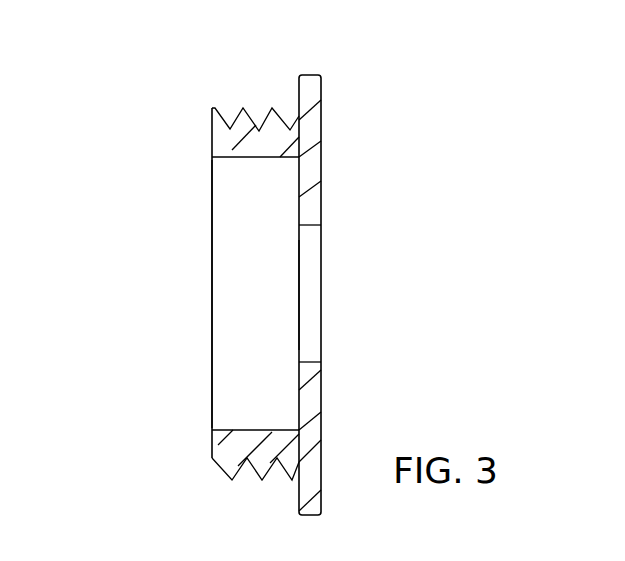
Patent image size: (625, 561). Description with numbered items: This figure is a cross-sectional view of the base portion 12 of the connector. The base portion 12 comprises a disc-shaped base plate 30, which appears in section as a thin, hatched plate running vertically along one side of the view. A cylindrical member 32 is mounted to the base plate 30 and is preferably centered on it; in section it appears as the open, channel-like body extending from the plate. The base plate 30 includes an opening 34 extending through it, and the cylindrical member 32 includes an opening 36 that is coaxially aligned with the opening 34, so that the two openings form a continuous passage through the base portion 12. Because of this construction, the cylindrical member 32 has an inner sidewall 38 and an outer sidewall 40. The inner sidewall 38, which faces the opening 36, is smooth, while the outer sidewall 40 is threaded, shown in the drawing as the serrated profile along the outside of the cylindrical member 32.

The base portion 12 is at (306, 265).
The base plate 30 is at (322, 140).
The cylindrical member 32 is at (174, 247).
The opening 34 is at (313, 298).
The opening 36 is at (252, 277).
The inner sidewall 38 is at (299, 118).
The outer sidewall 40 is at (235, 113).